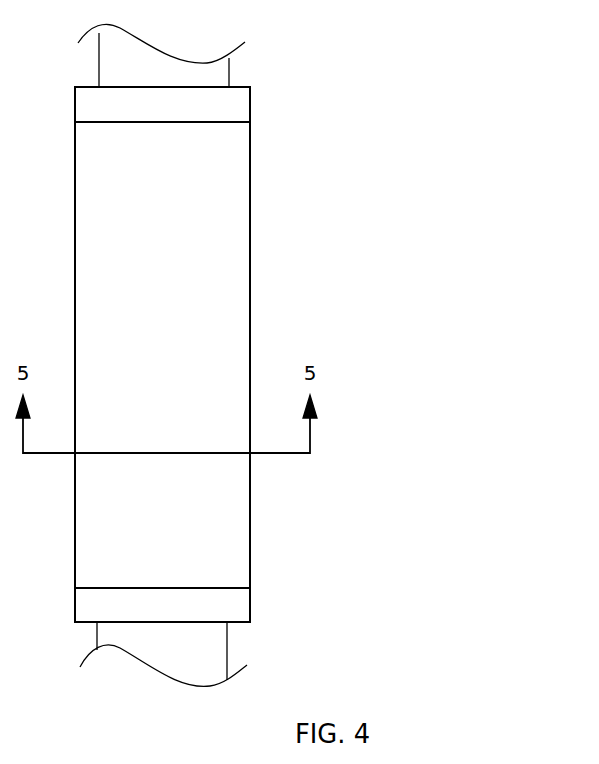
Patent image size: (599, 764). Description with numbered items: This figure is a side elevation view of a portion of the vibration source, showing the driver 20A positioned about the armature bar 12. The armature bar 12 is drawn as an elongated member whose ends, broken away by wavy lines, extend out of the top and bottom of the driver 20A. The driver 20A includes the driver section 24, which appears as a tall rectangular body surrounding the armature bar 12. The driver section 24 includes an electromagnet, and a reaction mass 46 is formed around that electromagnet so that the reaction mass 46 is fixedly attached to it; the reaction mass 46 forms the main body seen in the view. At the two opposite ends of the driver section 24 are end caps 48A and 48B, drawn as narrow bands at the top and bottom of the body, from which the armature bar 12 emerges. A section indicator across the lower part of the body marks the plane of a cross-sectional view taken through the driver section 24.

The armature bar 12 is at (99, 66).
The driver 20A is at (414, 72).
The driver section 24 is at (357, 174).
The reaction mass 46 is at (250, 293).
The end cap 48A is at (250, 92).
The end cap 48B is at (250, 605).